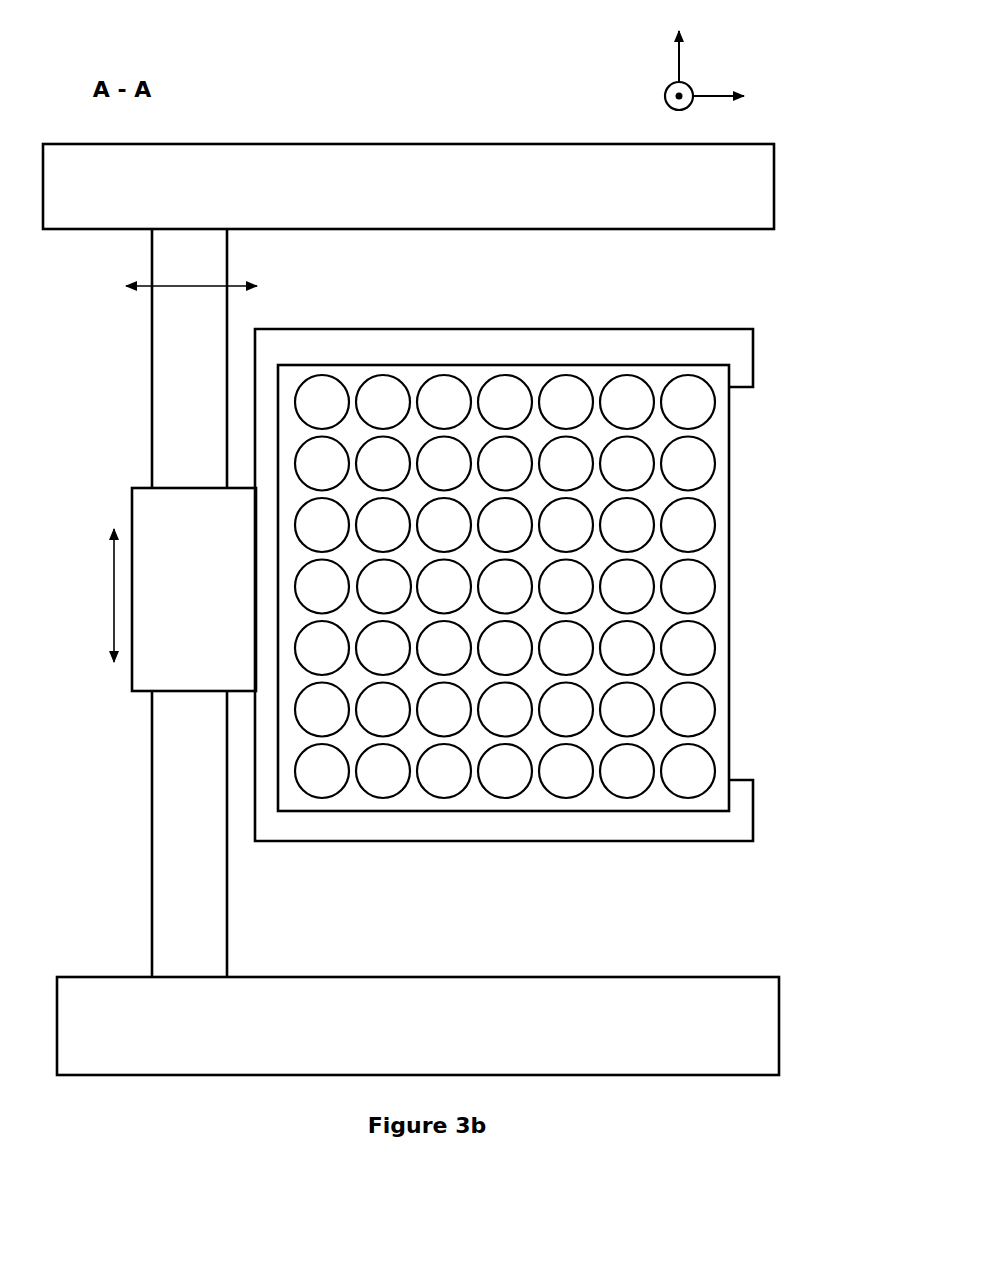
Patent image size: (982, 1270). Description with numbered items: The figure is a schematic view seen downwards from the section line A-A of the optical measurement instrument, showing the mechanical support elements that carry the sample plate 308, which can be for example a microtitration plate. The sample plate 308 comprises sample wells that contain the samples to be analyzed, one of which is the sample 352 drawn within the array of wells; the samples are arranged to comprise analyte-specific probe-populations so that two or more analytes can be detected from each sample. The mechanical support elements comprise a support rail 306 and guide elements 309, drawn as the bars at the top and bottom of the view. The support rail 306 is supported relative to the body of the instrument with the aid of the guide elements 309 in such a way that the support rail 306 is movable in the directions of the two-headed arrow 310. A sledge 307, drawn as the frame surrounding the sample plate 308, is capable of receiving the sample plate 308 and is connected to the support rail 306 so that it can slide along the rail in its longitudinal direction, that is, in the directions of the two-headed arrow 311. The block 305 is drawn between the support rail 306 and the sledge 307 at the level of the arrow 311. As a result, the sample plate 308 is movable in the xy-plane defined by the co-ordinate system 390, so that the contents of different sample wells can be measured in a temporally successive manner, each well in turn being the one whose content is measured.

The mount block 305 is at (194, 589).
The support rail 306 is at (189, 603).
The sledge 307 is at (637, 338).
The sample plate 308 is at (412, 378).
The guide elements 309 is at (411, 609).
The two-headed arrow 310 is at (143, 288).
The two-headed arrow 311 is at (113, 597).
The sample 352 is at (384, 587).
The co-ordinate system 390 is at (704, 44).